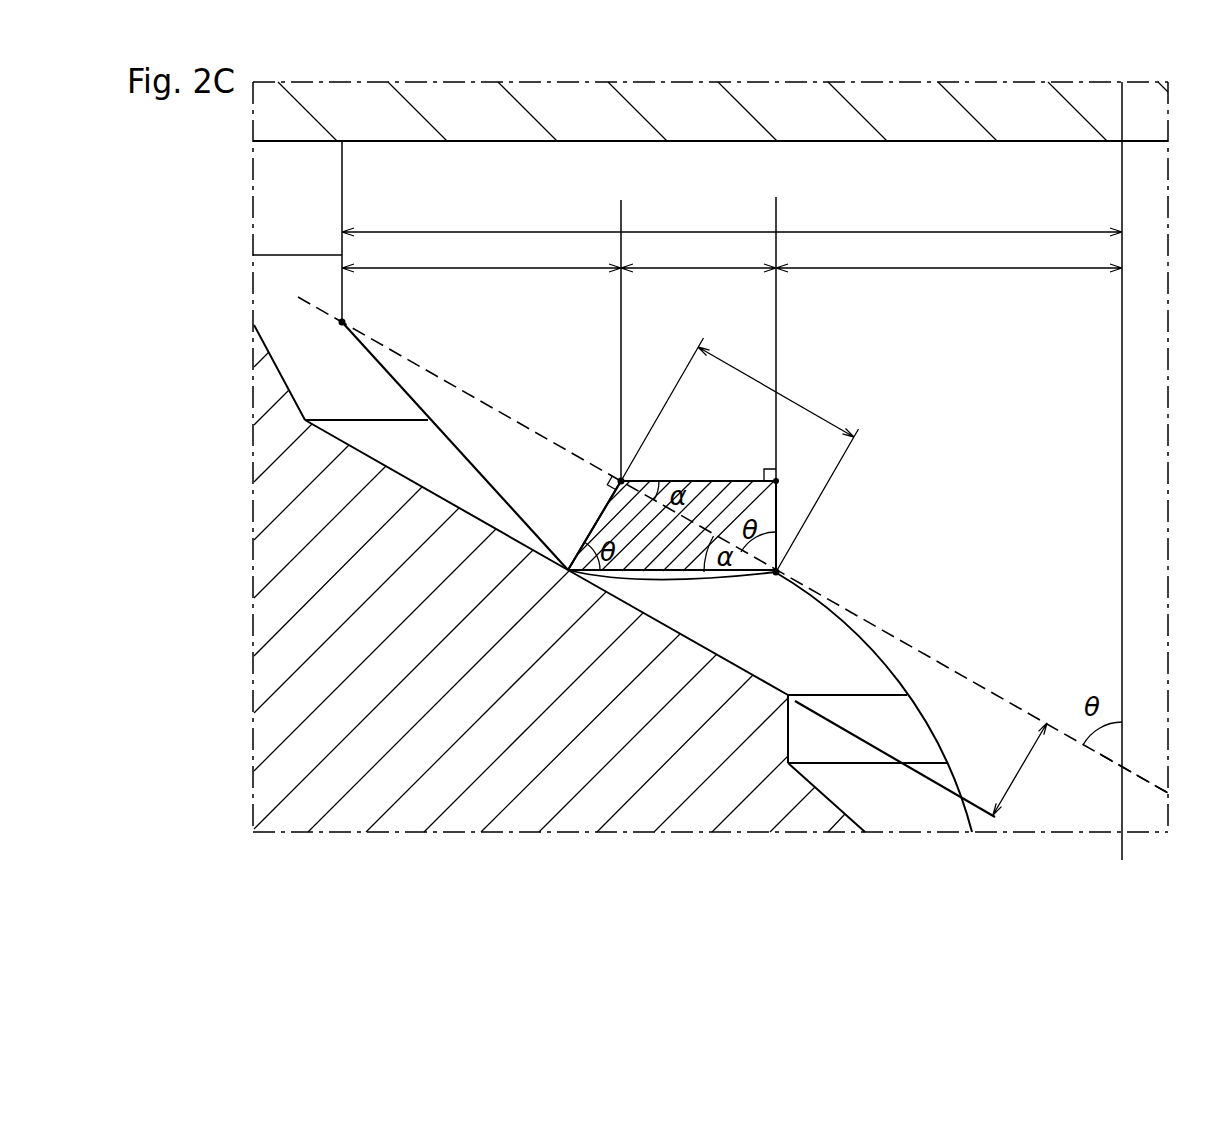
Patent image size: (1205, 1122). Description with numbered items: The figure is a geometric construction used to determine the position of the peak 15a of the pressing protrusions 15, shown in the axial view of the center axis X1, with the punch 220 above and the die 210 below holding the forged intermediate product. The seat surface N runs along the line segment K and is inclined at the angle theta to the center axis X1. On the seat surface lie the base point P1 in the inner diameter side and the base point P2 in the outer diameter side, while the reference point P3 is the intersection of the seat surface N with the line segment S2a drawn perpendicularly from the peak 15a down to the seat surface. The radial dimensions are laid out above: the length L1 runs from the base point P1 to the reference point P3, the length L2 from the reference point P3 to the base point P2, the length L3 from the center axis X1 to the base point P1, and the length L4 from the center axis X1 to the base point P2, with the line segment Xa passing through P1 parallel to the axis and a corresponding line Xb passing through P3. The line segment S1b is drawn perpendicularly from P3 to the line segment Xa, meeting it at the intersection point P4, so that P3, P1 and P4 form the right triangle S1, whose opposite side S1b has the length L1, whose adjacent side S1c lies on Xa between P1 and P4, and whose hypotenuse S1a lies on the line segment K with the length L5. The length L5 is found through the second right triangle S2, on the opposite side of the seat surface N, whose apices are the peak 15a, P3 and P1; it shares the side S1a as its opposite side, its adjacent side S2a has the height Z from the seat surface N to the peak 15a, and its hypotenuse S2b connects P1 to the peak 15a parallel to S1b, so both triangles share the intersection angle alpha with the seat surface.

The punch 220 is at (393, 121).
The die 210 is at (408, 766).
The pressing protrusions 15 is at (528, 510).
The peak of the pressing protrusions 15a is at (565, 578).
The base point in the inner diameter side P1 is at (778, 571).
The base point in the outer diameter side P2 is at (344, 321).
The reference point P3 is at (620, 479).
The intersection point P4 is at (778, 481).
The seat surface N is at (513, 420).
The line segment along the seat surface K is at (1147, 781).
The right triangle S1 is at (743, 498).
The line segment S1a is at (708, 540).
The line segment S1b is at (688, 480).
The line segment S1c is at (778, 522).
The right triangle S2 is at (652, 542).
The line segment S2a is at (598, 520).
The line segment S2b is at (675, 575).
The line segment Xa is at (775, 371).
The position Xb is at (621, 325).
The center axis X1 is at (1122, 487).
The length L1 is at (698, 256).
The length L2 is at (481, 255).
The length L3 is at (949, 256).
The length L4 is at (732, 219).
The length L5 is at (740, 455).
The height Z is at (1020, 769).